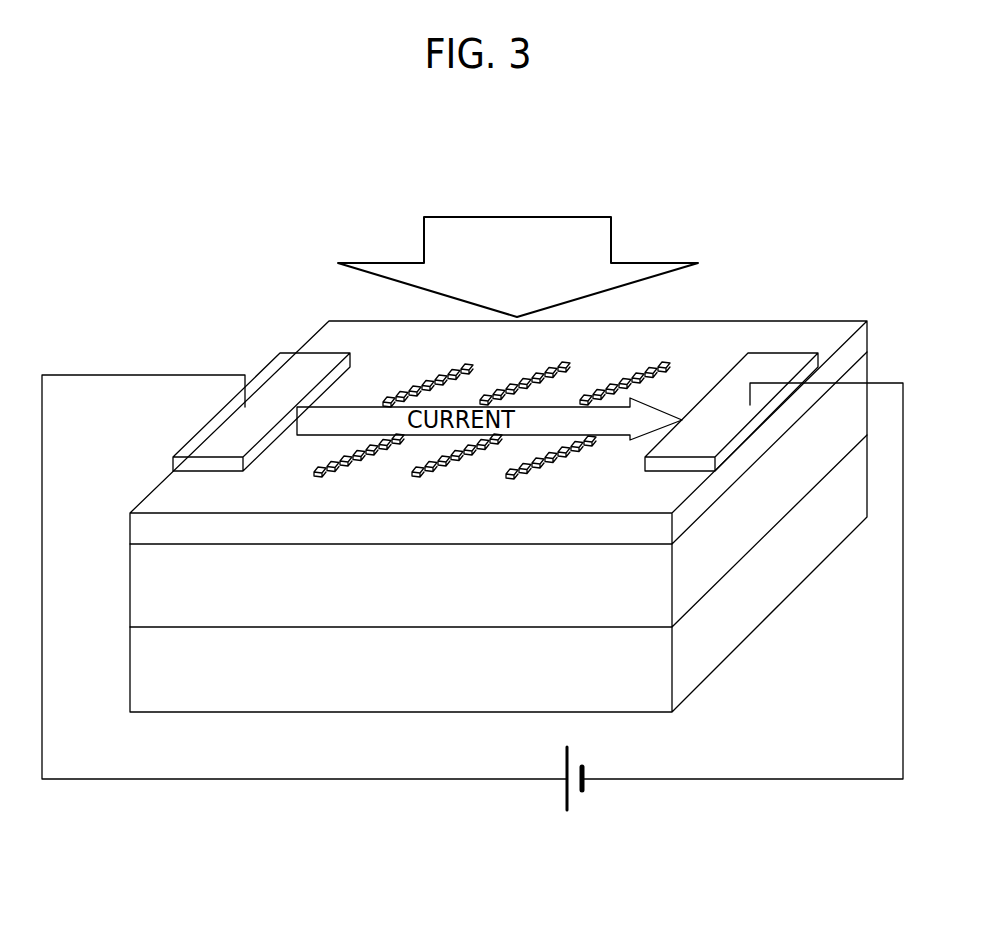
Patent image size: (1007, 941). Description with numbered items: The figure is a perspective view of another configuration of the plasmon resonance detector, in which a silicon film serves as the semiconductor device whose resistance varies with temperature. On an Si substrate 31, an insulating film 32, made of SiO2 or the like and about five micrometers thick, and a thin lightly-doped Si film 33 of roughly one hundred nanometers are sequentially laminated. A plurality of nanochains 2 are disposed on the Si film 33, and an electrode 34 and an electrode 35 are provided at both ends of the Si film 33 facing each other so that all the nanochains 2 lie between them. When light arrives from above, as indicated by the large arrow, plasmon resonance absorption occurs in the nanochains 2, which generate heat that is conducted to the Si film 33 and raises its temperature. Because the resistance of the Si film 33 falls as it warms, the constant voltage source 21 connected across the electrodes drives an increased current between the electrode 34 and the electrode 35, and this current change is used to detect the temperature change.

The nanochain 2 is at (472, 364).
The constant voltage source 21 is at (577, 800).
The Si substrate 31 is at (133, 674).
The insulating film 32 is at (133, 594).
The Si film 33 is at (133, 530).
The electrode 34 is at (276, 360).
The electrode 35 is at (778, 358).